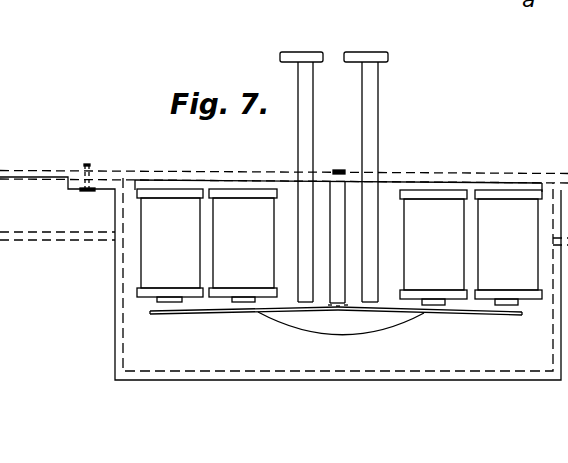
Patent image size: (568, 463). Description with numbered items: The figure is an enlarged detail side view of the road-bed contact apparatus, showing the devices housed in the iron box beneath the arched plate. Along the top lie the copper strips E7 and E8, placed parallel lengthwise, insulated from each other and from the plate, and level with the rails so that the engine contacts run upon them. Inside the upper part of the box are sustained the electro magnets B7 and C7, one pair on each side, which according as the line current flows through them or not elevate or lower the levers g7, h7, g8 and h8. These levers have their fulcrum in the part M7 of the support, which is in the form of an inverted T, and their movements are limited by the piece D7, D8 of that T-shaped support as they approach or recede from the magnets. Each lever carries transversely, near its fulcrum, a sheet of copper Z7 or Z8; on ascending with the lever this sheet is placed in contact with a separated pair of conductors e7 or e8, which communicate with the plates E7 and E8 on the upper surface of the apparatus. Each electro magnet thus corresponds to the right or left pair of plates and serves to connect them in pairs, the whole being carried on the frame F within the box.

The support F is at (284, 191).
The electro magnet B7 is at (207, 245).
The electro magnet C7 is at (471, 247).
The copper strip E7 is at (302, 127).
The copper strip E8 is at (366, 127).
The conductor e7 is at (309, 266).
The conductor e8 is at (374, 266).
The piece of T-shaped support D7 is at (301, 255).
The piece of T-shaped support D8 is at (349, 325).
The sheet of copper Z7 is at (244, 319).
The sheet of copper Z8 is at (430, 319).
The lever g7 is at (142, 315).
The lever g8 is at (353, 286).
The lever h7 is at (324, 289).
The lever h8 is at (532, 318).
The fulcrum of support M7 is at (337, 290).